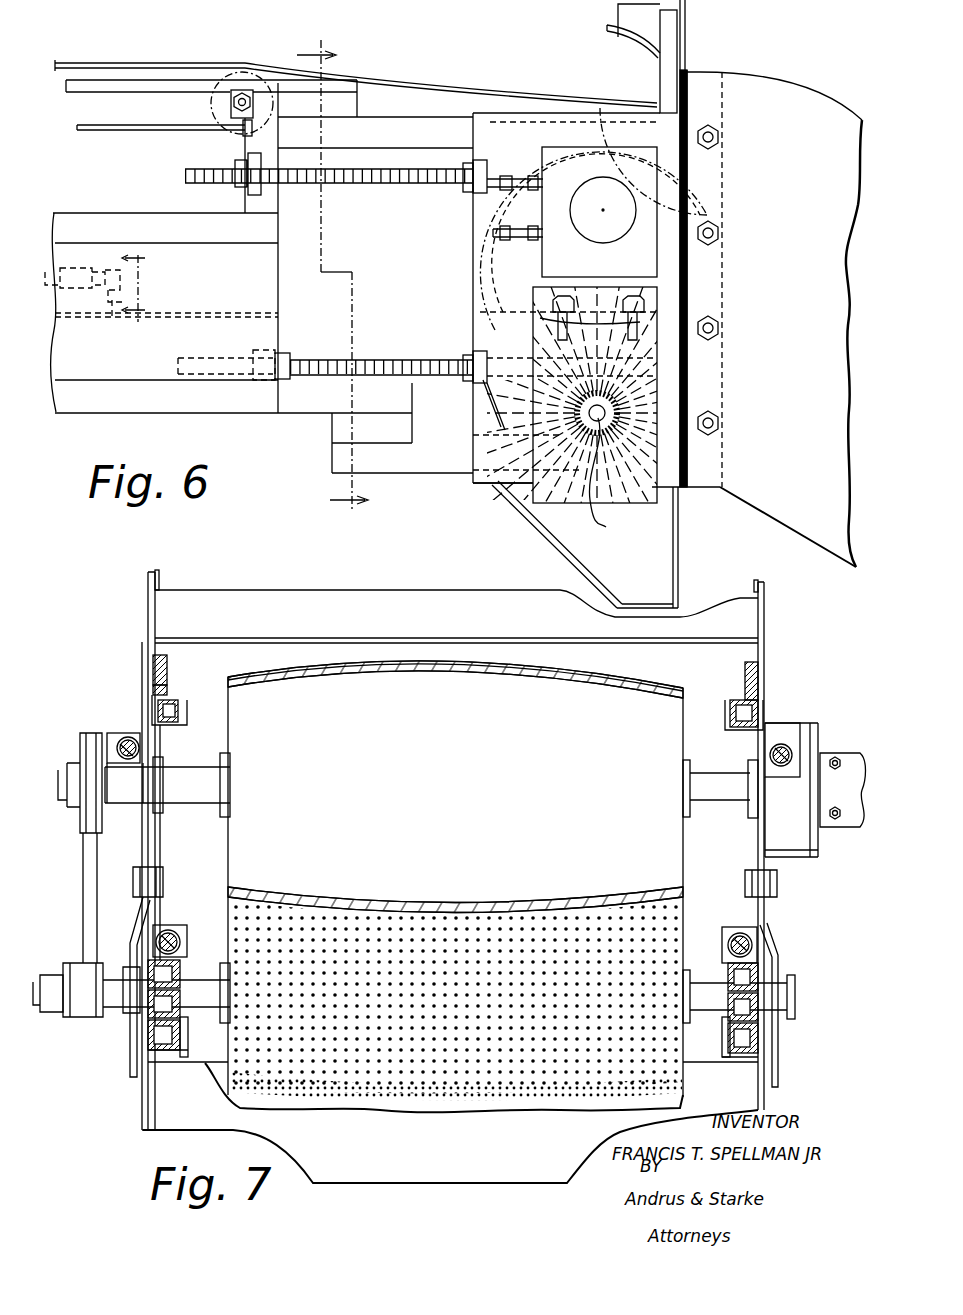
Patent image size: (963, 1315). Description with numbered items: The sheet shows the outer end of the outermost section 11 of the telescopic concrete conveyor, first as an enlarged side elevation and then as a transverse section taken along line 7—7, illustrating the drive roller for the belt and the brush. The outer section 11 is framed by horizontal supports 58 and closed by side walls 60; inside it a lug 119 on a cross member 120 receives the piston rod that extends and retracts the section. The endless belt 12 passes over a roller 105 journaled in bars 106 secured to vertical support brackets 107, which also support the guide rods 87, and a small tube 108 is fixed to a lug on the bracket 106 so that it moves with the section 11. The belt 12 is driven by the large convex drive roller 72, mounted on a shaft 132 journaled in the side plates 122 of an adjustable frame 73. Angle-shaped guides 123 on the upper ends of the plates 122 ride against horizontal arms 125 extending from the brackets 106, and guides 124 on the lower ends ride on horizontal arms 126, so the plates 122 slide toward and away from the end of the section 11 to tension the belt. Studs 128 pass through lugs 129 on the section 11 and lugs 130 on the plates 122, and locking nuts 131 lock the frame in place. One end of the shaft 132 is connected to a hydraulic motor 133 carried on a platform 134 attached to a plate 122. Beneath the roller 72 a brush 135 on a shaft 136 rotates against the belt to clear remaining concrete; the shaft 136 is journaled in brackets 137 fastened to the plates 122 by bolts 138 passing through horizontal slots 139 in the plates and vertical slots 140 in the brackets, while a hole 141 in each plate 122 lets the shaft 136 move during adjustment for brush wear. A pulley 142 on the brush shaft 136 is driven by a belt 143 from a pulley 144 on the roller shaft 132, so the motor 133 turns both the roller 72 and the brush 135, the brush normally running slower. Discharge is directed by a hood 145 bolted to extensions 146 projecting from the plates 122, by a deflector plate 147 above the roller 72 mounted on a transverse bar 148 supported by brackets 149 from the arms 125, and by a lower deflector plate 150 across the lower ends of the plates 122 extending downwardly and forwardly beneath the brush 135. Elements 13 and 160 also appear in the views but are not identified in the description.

In FIG. 6, the section line 7 is at (340, 279).
In FIG. 6, the outer section 11 is at (106, 213).
In FIG. 6, the endless belt 12 is at (450, 86).
In FIG. 7, the endless belt 12 is at (293, 680).
In FIG. 6, the drive housing 13 is at (640, 172).
In FIG. 6, the horizontal supports 58 is at (162, 213).
In FIG. 6, the side walls 60 is at (160, 400).
In FIG. 6, the drive roller 72 is at (700, 215).
In FIG. 7, the drive roller 72 is at (452, 763).
In FIG. 6, the adjustable frame 73 is at (452, 486).
In FIG. 7, the adjustable frame 73 is at (143, 1072).
In FIG. 6, the guide rods 87 is at (196, 82).
In FIG. 7, the guide rods 87 is at (168, 668).
In FIG. 6, the roller 105 is at (245, 72).
In FIG. 6, the bars 106 is at (350, 112).
In FIG. 7, the bars 106 is at (168, 690).
In FIG. 6, the vertical support brackets 107 is at (240, 131).
In FIG. 6, the small diameter tube 108 is at (106, 128).
In FIG. 6, the lug 119 is at (128, 287).
In FIG. 6, the cross member 120 is at (112, 315).
In FIG. 6, the side plates 122 is at (472, 257).
In FIG. 7, the side plates 122 is at (158, 837).
In FIG. 6, the angle-shaped guides 123 is at (470, 157).
In FIG. 7, the angle-shaped guides 123 is at (190, 722).
In FIG. 6, the angle-shaped guides 124 is at (470, 433).
In FIG. 7, the angle-shaped guides 124 is at (182, 1042).
In FIG. 6, the horizontal arms 125 is at (366, 148).
In FIG. 7, the horizontal arms 125 is at (180, 715).
In FIG. 6, the horizontal arms 126 is at (447, 468).
In FIG. 7, the horizontal arms 126 is at (172, 1052).
In FIG. 6, the studs 128 is at (384, 184).
In FIG. 7, the studs 128 is at (130, 742).
In FIG. 6, the lugs 129 is at (248, 185).
In FIG. 6, the lugs 130 is at (470, 190).
In FIG. 7, the lugs 130 is at (110, 740).
In FIG. 6, the locking nuts 131 is at (246, 158).
In FIG. 7, the locking nuts 131 is at (142, 754).
In FIG. 7, the shaft 132 is at (208, 795).
In FIG. 7, the hydraulic motor 133 is at (855, 828).
In FIG. 7, the platform 134 is at (812, 860).
In FIG. 6, the brush 135 is at (700, 395).
In FIG. 7, the brush 135 is at (500, 898).
In FIG. 6, the shaft 136 is at (616, 476).
In FIG. 7, the shaft 136 is at (63, 985).
In FIG. 6, the brackets 137 is at (520, 505).
In FIG. 7, the brackets 137 is at (127, 1063).
In FIG. 6, the bolts 138 is at (635, 282).
In FIG. 7, the bolts 138 is at (136, 880).
In FIG. 6, the horizontal slots 139 is at (524, 312).
In FIG. 6, the vertical slots 140 is at (640, 322).
In FIG. 6, the hole 141 is at (487, 394).
In FIG. 7, the pulley 142 is at (76, 1020).
In FIG. 7, the belt 143 is at (84, 902).
In FIG. 7, the pulley 144 is at (80, 742).
In FIG. 6, the hood 145 is at (803, 98).
In FIG. 6, the extensions 146 is at (689, 494).
In FIG. 6, the deflector plate 147 is at (616, 38).
In FIG. 7, the deflector plate 147 is at (333, 593).
In FIG. 6, the bar 148 is at (617, 8).
In FIG. 7, the bar 148 is at (195, 563).
In FIG. 6, the brackets 149 is at (678, 46).
In FIG. 7, the brackets 149 is at (148, 614).
In FIG. 6, the deflector plate 150 is at (565, 555).
In FIG. 7, the deflector plate 150 is at (432, 1178).
In FIG. 6, the rod 160 is at (505, 228).